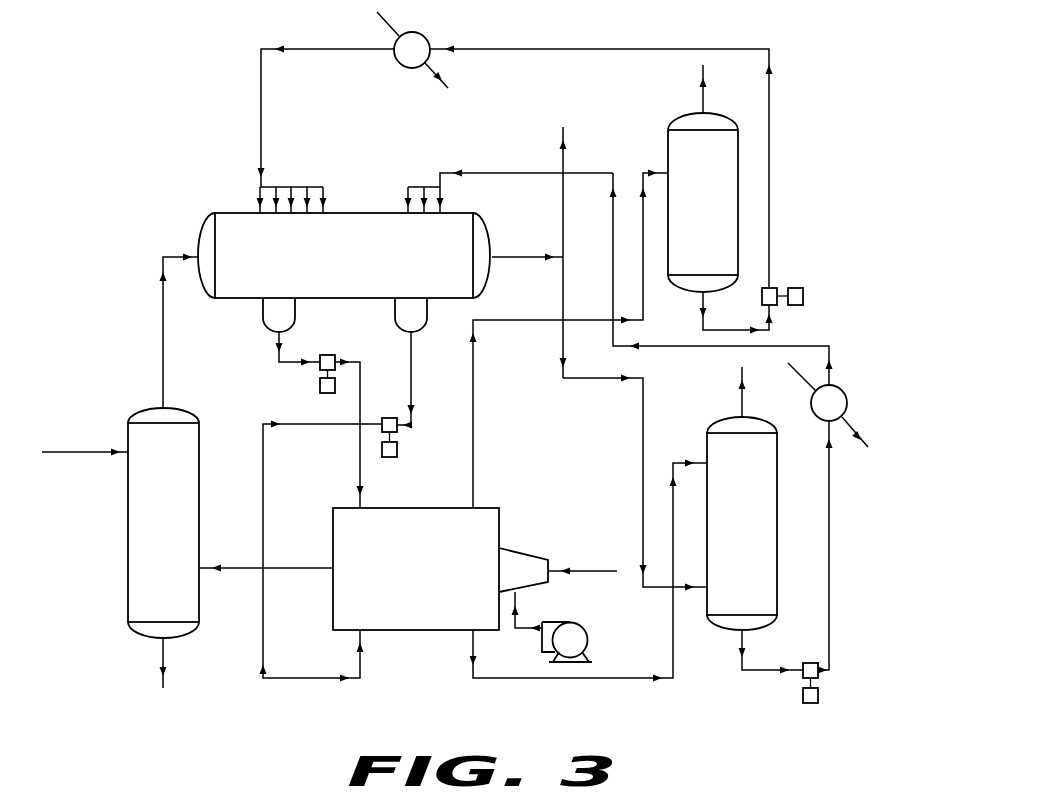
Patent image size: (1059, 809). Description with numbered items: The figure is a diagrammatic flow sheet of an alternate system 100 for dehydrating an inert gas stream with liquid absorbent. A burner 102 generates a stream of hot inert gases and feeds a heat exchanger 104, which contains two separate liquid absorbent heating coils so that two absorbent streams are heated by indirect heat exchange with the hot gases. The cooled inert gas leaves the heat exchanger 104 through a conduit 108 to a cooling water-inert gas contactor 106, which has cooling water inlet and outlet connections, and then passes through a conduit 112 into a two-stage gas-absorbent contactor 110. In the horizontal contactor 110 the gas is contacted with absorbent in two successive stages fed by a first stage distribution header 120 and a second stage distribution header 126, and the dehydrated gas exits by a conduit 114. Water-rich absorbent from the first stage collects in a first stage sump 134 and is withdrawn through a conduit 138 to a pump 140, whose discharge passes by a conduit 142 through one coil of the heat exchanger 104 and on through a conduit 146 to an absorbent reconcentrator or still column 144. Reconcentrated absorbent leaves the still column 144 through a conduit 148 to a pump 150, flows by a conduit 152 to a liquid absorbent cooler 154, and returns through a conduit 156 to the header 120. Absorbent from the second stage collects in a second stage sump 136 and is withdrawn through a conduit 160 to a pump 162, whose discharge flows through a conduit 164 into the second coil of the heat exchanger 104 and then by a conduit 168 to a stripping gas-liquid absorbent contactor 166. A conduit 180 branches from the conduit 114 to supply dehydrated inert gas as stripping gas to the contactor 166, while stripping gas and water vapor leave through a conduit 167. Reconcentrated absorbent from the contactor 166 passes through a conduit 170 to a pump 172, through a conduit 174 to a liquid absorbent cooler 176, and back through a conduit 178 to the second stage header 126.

The system 100 is at (350, 192).
The burner 102 is at (513, 557).
The heat exchanger 104 is at (482, 513).
The cooling water-inert gas contactor 106 is at (193, 533).
The conduit 108 is at (280, 572).
The two-stage gas-absorbent contactor 110 is at (373, 194).
The conduit 112 is at (164, 342).
The conduit 114 is at (563, 199).
The liquid absorbent distribution header 120 is at (284, 185).
The distribution header 126 is at (418, 186).
The first stage liquid absorbent accumulator sump 134 is at (295, 320).
The second stage liquid accumulator sump 136 is at (427, 320).
The conduit 138 is at (285, 345).
The liquid absorbent pump 140 is at (331, 359).
The conduit 142 is at (361, 383).
The absorbent reconcentrator 144 is at (668, 144).
The conduit 146 is at (474, 410).
The conduit 148 is at (718, 328).
The liquid absorbent pump 150 is at (796, 289).
The conduit 152 is at (770, 243).
The liquid absorbent cooler 154 is at (405, 62).
The conduit 156 is at (318, 55).
The conduit 160 is at (412, 360).
The liquid absorbent pump 162 is at (392, 418).
The conduit 164 is at (306, 432).
The stripping gas-liquid absorbent contactor 166 is at (707, 444).
The conduit 167 is at (744, 401).
The conduit 168 is at (526, 676).
The conduit 170 is at (766, 672).
The liquid absorbent pump 172 is at (812, 663).
The conduit 174 is at (833, 554).
The liquid absorbent cooler 176 is at (843, 403).
The conduit 178 is at (613, 224).
The conduit 180 is at (642, 431).